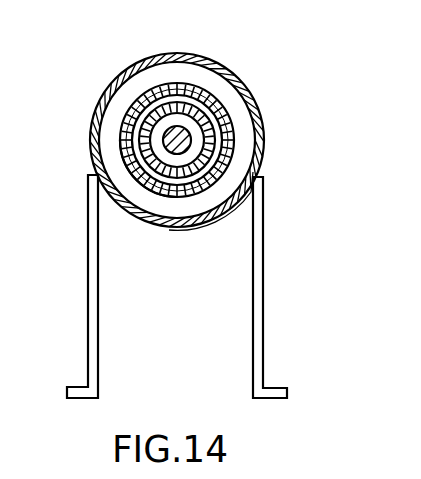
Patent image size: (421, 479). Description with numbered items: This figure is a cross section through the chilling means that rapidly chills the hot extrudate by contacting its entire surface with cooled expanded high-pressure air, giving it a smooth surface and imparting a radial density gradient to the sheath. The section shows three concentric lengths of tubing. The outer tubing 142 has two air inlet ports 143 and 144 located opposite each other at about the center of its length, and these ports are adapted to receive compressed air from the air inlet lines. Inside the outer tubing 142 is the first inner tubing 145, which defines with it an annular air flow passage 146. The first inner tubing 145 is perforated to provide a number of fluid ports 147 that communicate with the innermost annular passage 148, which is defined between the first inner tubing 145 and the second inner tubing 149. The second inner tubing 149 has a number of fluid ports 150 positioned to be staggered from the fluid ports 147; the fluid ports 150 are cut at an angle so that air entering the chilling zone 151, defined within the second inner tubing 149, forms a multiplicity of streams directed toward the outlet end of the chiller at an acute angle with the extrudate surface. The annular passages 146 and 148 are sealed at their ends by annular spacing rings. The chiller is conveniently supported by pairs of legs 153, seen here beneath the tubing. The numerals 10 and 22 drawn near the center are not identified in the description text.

The shaft 10 is at (189, 134).
The hub 22 is at (186, 128).
The outer tubing 142 is at (182, 122).
The air inlet port 143 is at (92, 138).
The air inlet port 144 is at (262, 142).
The first inner tubing 145 is at (178, 87).
The annular air flow passage 146 is at (240, 163).
The fluid ports 147 is at (163, 88).
The innermost annular passage 148 is at (155, 184).
The second inner tubing 149 is at (128, 163).
The fluid ports 150 is at (130, 110).
The chilling zone 151 is at (202, 190).
The legs 153 is at (92, 348).